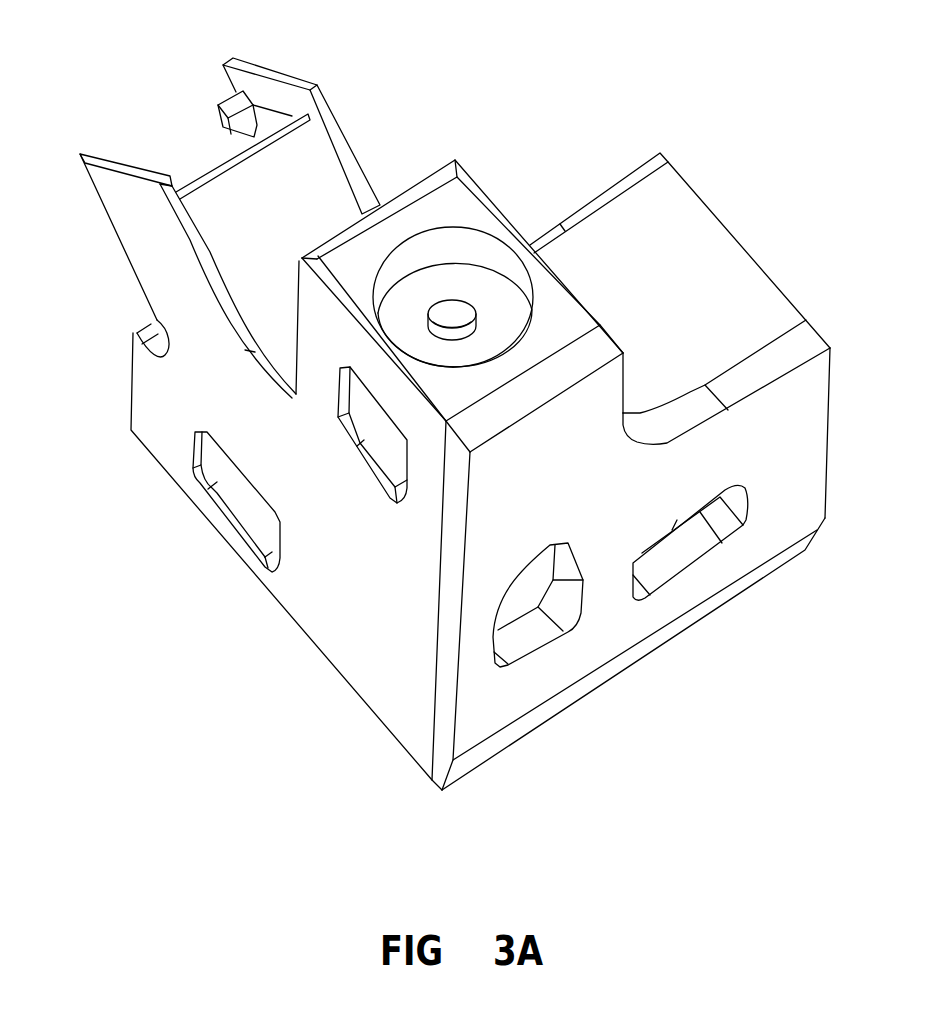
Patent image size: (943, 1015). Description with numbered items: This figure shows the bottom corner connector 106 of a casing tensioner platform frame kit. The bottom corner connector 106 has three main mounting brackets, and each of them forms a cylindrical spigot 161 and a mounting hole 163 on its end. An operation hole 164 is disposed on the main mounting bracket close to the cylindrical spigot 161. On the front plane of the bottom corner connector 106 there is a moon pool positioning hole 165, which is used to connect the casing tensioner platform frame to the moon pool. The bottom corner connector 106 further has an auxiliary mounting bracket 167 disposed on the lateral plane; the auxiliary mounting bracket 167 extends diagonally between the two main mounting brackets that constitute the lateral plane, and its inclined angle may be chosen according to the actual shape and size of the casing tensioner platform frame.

The spring clip 106 is at (215, 227).
The countersunk bore 161 is at (390, 275).
The through hole 163 is at (432, 327).
The side slot 164 is at (377, 483).
The front slot 165 is at (547, 622).
The clip leg panel 167 is at (140, 240).